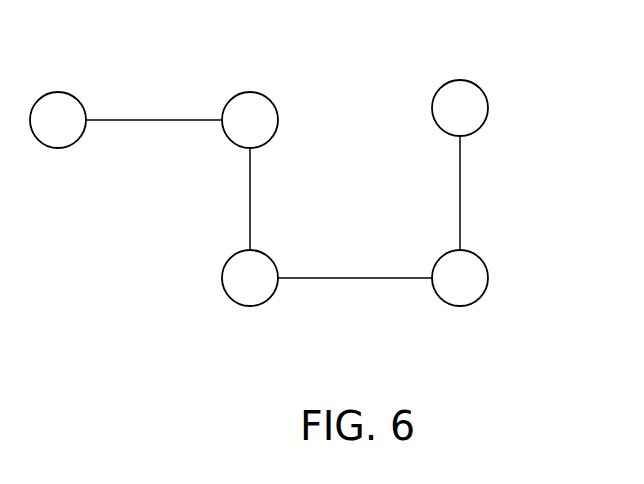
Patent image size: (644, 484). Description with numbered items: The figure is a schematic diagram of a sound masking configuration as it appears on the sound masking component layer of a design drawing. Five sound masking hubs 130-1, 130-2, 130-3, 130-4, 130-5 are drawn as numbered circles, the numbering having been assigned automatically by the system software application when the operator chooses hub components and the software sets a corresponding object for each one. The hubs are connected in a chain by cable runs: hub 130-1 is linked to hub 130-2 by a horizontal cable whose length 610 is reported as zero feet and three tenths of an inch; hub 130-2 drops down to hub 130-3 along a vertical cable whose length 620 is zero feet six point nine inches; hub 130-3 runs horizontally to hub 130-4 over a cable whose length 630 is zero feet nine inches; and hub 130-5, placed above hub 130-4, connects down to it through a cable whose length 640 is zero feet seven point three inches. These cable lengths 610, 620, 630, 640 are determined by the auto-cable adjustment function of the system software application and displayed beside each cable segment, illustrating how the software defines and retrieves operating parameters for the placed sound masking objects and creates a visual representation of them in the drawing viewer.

The sound masking hub 130-1 is at (63, 92).
The sound masking hub 130-2 is at (257, 93).
The sound masking hub 130-3 is at (272, 260).
The sound masking hub 130-4 is at (488, 277).
The sound masking hub 130-5 is at (487, 102).
The cable length 610 is at (108, 125).
The cable length 620 is at (250, 175).
The cable length 630 is at (397, 278).
The cable length 640 is at (462, 168).